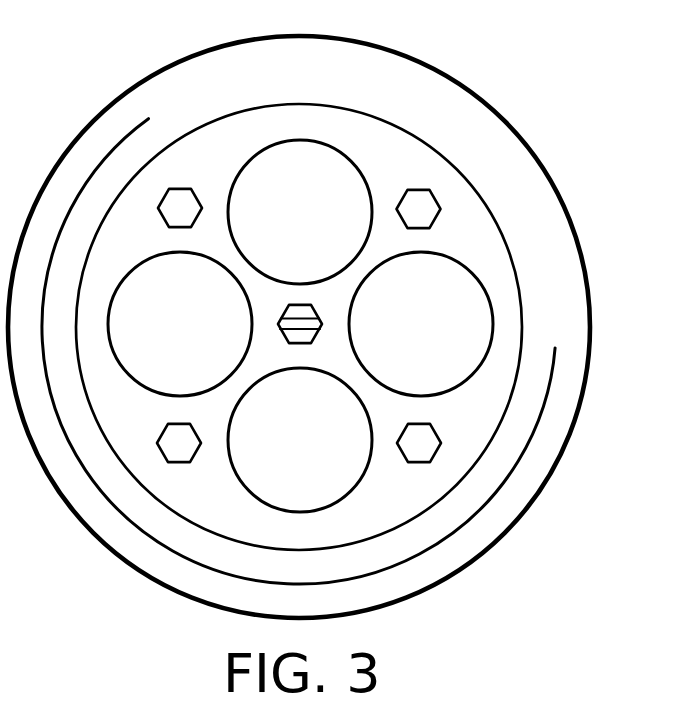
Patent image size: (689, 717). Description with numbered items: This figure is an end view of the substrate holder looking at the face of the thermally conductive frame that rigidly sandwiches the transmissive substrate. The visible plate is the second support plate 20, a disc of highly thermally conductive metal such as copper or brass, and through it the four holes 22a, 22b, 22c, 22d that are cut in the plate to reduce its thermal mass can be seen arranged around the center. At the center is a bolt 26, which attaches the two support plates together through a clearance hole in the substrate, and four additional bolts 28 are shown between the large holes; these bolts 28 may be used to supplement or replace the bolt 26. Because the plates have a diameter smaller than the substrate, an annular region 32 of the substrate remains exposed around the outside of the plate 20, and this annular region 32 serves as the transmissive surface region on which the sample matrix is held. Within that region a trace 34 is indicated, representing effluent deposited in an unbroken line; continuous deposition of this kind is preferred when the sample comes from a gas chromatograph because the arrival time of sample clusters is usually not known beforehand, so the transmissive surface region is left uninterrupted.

The second support plate 20 is at (393, 134).
The hole 22a is at (318, 224).
The hole 22b is at (444, 340).
The hole 22c is at (318, 456).
The hole 22d is at (193, 338).
The bolt 26 is at (303, 341).
The additional bolts 28 is at (175, 190).
The annular region 32 is at (535, 212).
The trace 34 is at (490, 502).